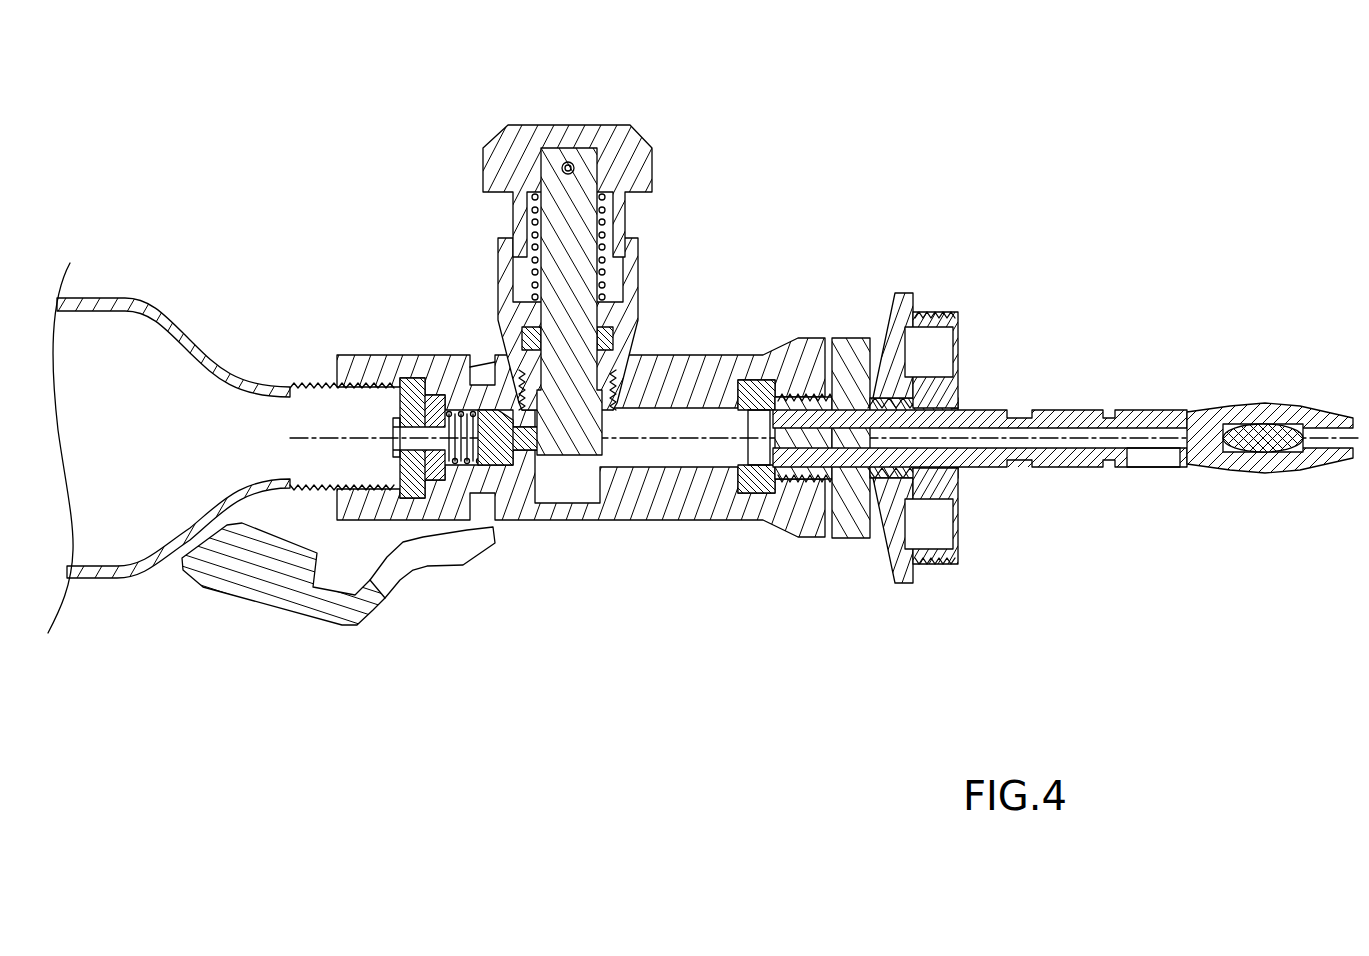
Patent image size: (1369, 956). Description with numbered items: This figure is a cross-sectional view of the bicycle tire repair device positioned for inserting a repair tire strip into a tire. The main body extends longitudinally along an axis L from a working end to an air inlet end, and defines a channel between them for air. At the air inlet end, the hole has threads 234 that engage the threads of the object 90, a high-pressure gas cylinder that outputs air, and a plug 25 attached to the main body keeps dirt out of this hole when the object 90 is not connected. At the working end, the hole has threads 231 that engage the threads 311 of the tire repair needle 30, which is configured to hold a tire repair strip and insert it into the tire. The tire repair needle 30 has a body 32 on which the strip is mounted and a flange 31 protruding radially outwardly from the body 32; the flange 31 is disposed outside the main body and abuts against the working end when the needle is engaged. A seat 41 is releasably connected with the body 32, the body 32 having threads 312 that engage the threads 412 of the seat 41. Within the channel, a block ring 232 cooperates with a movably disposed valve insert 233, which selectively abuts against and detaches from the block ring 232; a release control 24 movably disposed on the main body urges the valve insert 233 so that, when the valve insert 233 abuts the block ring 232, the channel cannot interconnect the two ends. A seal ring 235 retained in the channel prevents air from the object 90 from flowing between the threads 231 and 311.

The object 90 is at (142, 300).
The axis L is at (304, 432).
The threads 234 is at (338, 388).
The block ring 232 is at (516, 452).
The valve insert 233 is at (552, 468).
The release control 24 is at (616, 145).
The plug 25 is at (375, 605).
The threads 231 is at (812, 398).
The seal ring 235 is at (752, 495).
The tire repair needle 30 is at (1059, 383).
The flange 31 is at (843, 527).
The threads 311 is at (787, 495).
The threads 312 is at (925, 484).
The seat 41 is at (897, 296).
The threads 412 is at (922, 397).
The body 32 is at (1143, 412).